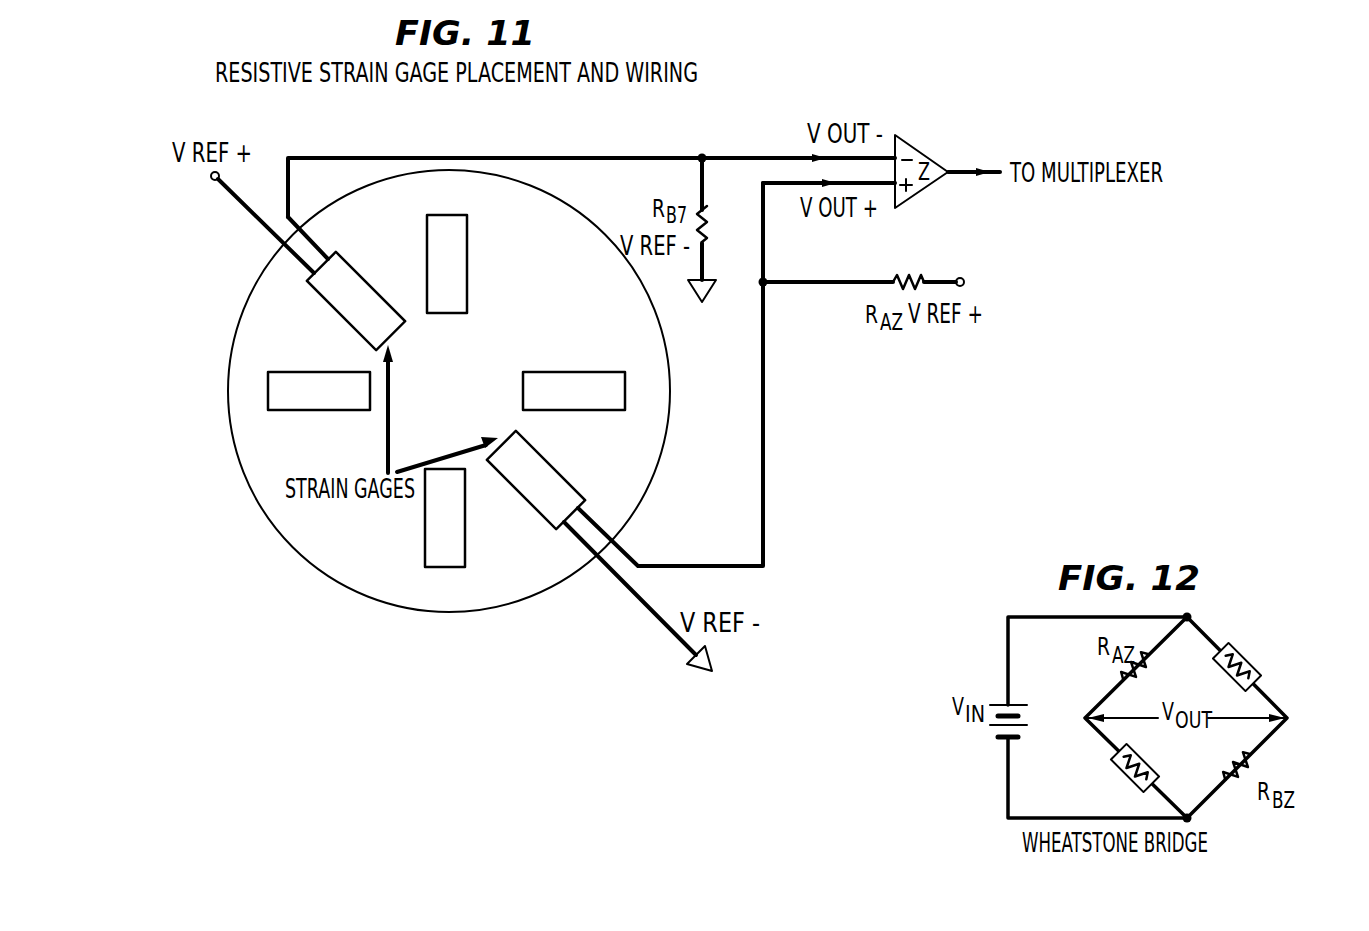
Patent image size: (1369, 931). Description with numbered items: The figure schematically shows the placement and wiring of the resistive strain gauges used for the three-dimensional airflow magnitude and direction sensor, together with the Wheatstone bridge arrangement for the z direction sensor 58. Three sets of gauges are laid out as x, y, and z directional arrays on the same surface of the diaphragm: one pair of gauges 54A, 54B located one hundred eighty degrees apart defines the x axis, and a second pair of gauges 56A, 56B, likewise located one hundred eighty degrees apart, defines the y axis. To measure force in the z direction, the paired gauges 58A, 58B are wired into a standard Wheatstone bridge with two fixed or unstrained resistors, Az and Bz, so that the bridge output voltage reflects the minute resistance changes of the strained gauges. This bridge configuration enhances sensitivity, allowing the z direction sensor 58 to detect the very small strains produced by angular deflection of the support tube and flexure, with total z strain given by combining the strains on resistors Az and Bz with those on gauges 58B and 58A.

In FIG. 11, the strain gauge 54A is at (319, 412).
In FIG. 11, the strain gauge 54B is at (575, 412).
In FIG. 11, the strain gauge 56A is at (444, 246).
In FIG. 11, the strain gauge 56B is at (445, 535).
In FIG. 11, the strain gauge 58A is at (311, 264).
In FIG. 11, the strain gauge 58B is at (599, 551).
In FIG. 12, the strain gauge 58B is at (1192, 717).
In FIG. 11, the z direction sensor 58 is at (449, 347).
In FIG. 12, the z direction sensor 58 is at (1137, 750).